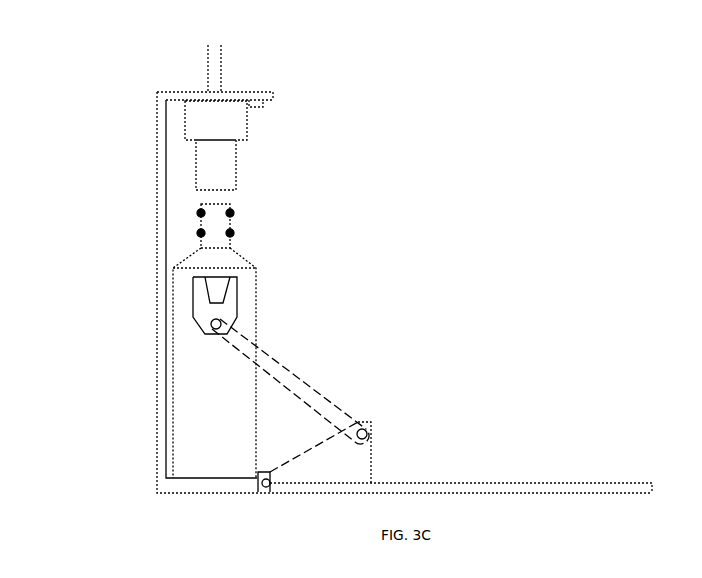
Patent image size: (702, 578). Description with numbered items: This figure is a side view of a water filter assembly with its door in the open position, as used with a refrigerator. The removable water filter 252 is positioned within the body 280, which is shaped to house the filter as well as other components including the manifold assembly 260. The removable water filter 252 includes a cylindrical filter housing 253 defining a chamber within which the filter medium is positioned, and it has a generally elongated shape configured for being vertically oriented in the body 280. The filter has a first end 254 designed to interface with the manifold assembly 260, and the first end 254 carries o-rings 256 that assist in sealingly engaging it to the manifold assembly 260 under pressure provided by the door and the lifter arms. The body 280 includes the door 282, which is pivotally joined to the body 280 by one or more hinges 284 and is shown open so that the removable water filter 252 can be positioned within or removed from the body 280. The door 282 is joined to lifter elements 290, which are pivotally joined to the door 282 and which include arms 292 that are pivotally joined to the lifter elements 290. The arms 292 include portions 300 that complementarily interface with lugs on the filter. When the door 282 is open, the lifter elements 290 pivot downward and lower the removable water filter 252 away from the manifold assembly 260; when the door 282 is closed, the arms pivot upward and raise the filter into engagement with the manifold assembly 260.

The body 280 is at (274, 98).
The manifold assembly 260 is at (215, 130).
The first end 254 is at (232, 204).
The o-rings 256 is at (200, 213).
The cylindrical filter housing 253 is at (185, 412).
The removable water filter 252 is at (245, 325).
The portions 300 is at (210, 303).
The arms 292 is at (228, 311).
The lifter elements 290 is at (318, 397).
The hinges 284 is at (273, 486).
The door 282 is at (584, 487).